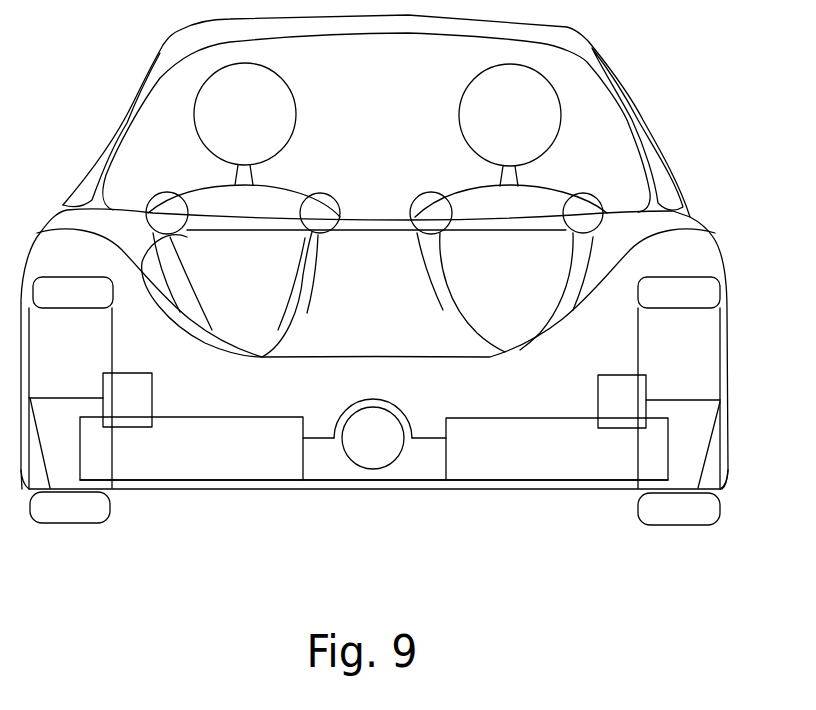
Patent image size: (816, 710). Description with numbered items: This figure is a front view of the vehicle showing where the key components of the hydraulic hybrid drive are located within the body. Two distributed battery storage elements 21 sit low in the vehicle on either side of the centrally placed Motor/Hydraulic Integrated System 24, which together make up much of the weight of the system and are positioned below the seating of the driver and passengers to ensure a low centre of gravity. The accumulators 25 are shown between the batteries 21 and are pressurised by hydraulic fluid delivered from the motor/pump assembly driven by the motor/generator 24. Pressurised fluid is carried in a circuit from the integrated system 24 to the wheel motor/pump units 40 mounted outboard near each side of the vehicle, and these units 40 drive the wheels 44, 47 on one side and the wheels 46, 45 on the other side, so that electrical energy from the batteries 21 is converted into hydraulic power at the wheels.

The battery 21 is at (223, 450).
The motor/generator 24 is at (430, 468).
The accumulators 25 is at (370, 443).
The motor/pump unit 40 is at (133, 415).
The wheel 44 is at (62, 467).
The wheel 47 is at (70, 508).
The wheel 46 is at (679, 467).
The wheel 45 is at (698, 507).